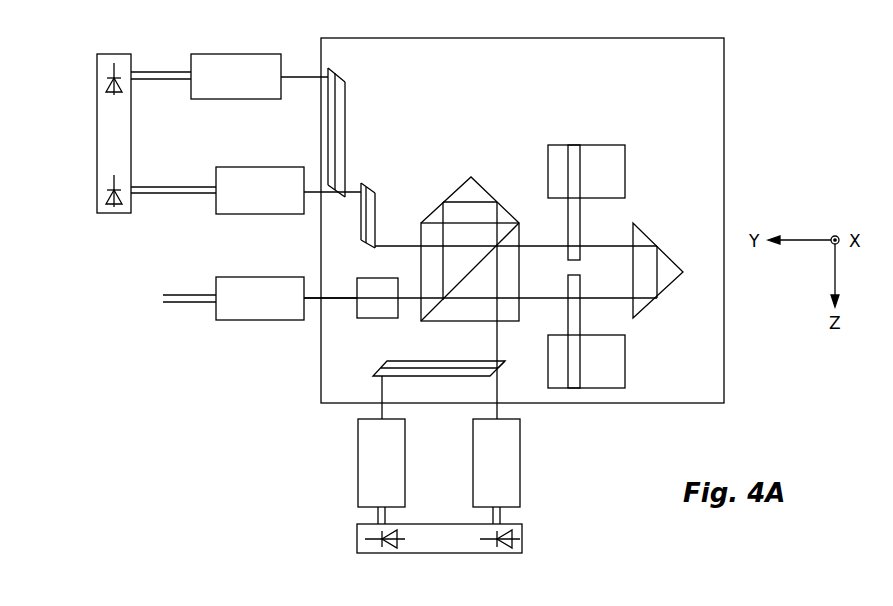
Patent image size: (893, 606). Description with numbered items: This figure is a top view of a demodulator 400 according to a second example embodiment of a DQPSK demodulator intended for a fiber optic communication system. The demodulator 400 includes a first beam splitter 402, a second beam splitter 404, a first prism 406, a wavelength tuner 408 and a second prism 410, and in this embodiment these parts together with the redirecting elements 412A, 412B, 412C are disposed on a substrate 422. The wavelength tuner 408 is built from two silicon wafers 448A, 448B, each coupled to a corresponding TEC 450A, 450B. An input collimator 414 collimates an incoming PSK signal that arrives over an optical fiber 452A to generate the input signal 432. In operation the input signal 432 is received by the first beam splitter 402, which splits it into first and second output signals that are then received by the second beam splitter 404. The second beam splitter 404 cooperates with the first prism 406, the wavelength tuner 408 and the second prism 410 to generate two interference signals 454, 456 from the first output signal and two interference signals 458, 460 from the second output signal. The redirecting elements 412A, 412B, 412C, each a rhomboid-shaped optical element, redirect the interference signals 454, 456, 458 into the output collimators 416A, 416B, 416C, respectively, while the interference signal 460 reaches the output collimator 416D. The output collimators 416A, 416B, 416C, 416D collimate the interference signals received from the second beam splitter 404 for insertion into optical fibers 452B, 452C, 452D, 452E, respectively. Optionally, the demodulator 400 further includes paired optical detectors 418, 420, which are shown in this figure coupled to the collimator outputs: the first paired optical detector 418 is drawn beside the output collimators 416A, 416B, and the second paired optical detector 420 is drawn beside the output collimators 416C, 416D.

The demodulator 400 is at (763, 104).
The first beam splitter 402 is at (368, 320).
The second beam splitter 404 is at (458, 323).
The first prism 406 is at (450, 195).
The wavelength tuner 408 is at (575, 103).
The second prism 410 is at (665, 255).
The redirecting element 412A is at (345, 108).
The redirecting element 412B is at (373, 213).
The redirecting element 412C is at (455, 378).
The input collimator 414 is at (260, 298).
The output collimator 416A is at (236, 76).
The output collimator 416B is at (260, 190).
The output collimator 416C is at (381, 463).
The output collimator 416D is at (496, 463).
The paired optical detector 418 is at (115, 54).
The paired optical detector 420 is at (522, 540).
The substrate 422 is at (496, 91).
The input signal 432 is at (337, 298).
The silicon wafer 448A is at (580, 318).
The silicon wafer 448B is at (580, 225).
The TEC 450A is at (625, 362).
The TEC 450B is at (625, 172).
The optical fiber 452A is at (186, 303).
The optical fiber 452B is at (162, 82).
The optical fiber 452C is at (182, 195).
The optical fiber 452D is at (378, 516).
The optical fiber 452E is at (492, 516).
The interference signal 454 is at (302, 74).
The interference signal 456 is at (378, 378).
The interference signal 458 is at (313, 190).
The interference signal 460 is at (505, 390).